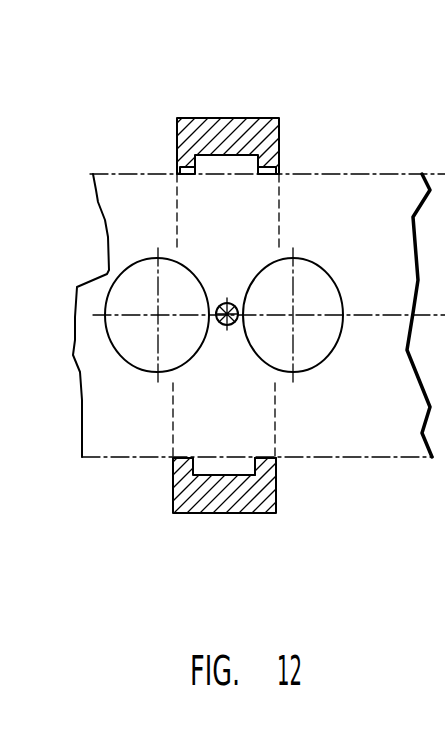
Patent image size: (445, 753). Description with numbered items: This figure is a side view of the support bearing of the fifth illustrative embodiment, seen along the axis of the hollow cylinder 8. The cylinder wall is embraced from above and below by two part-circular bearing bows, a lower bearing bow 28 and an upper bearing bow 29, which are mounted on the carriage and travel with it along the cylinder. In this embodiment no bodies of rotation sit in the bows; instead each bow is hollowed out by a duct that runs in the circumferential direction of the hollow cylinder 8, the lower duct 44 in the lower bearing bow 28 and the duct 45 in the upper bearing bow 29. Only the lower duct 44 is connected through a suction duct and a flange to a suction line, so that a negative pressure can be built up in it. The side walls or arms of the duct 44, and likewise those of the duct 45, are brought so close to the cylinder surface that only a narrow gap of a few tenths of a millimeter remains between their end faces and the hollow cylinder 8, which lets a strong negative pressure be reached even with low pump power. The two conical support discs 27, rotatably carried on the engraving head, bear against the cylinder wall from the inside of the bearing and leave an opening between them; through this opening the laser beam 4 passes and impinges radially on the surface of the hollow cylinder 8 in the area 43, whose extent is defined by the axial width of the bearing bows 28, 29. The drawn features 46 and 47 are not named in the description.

The laser beam 4 is at (219, 304).
The hollow cylinder 8 is at (313, 174).
The support discs 27 is at (257, 345).
The lower bearing bow 28 is at (238, 502).
The upper bearing bow 29 is at (242, 118).
The area 43 is at (278, 217).
The lower duct 44 is at (207, 467).
The duct 45 is at (232, 167).
The lower bracket leg 46 is at (278, 482).
The upper bracket leg 47 is at (185, 149).